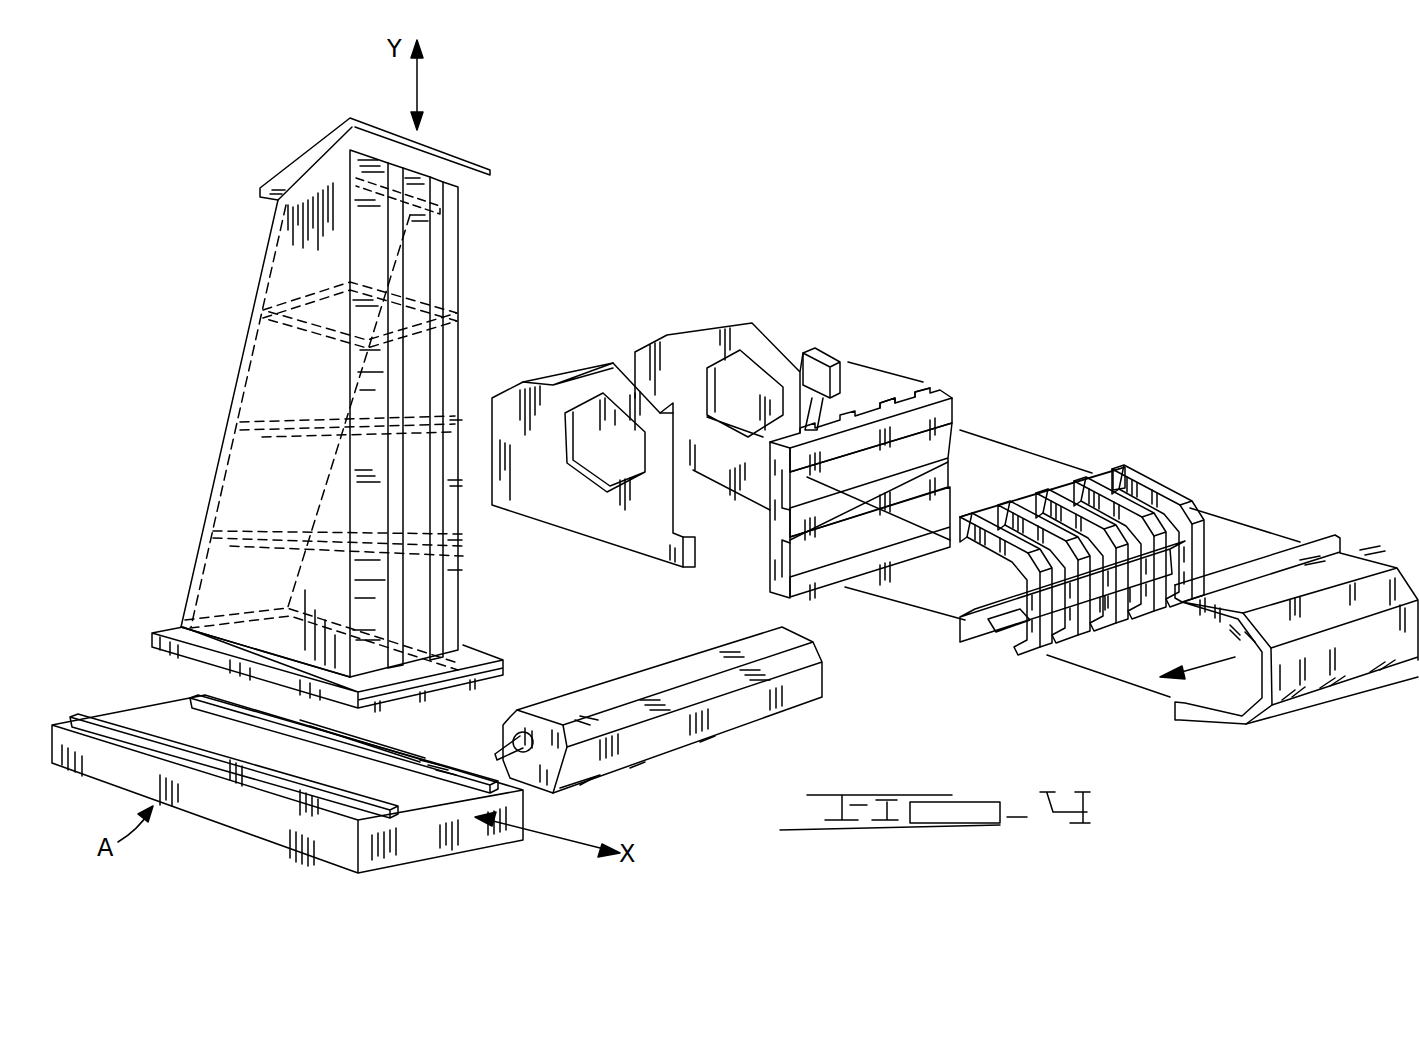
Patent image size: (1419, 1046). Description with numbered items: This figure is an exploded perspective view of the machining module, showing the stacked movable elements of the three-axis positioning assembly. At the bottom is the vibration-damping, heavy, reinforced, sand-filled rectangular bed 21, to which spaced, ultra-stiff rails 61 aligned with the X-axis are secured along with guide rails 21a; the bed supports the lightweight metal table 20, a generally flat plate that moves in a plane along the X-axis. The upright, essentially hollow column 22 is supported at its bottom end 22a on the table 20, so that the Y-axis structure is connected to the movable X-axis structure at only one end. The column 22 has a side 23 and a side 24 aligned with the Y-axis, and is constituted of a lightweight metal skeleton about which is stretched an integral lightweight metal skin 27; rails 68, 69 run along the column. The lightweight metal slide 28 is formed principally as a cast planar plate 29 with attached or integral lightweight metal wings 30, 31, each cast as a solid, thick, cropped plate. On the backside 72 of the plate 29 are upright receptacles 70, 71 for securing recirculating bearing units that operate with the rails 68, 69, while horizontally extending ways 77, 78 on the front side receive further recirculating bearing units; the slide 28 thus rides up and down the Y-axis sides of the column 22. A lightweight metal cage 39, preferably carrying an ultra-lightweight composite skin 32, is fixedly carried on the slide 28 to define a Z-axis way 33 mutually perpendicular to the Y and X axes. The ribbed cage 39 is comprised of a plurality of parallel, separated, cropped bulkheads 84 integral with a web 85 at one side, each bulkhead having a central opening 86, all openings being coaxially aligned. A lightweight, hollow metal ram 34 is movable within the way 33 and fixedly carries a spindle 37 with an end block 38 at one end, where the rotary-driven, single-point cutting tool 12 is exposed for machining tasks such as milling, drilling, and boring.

The single-point cutting tool 12 is at (495, 757).
The table 20 is at (510, 662).
The bed 21 is at (238, 802).
The guide rails 21a is at (212, 743).
The column 22 is at (325, 391).
The bottom end of column 22a is at (257, 652).
The side of column 23 is at (418, 330).
The side of column 24 is at (285, 280).
The metal skin 27 is at (247, 487).
The slide 28 is at (896, 454).
The plate 29 is at (950, 395).
The wing 30 is at (530, 387).
The wing 31 is at (775, 394).
The composite skin 32 is at (1227, 723).
The Z-axis way 33 is at (1208, 657).
The ram 34 is at (669, 715).
The spindle 37 is at (597, 773).
The slide end block 38 is at (535, 710).
The cage 39 is at (998, 635).
The rails 61 is at (433, 767).
The rail 68 is at (402, 165).
The rail 69 is at (443, 187).
The upright receptacle 70 is at (917, 388).
The upright receptacle 71 is at (837, 323).
The backside of plate 72 is at (882, 398).
The horizontally extending way 77 is at (900, 422).
The horizontally extending way 78 is at (935, 507).
The bulkheads 84 is at (1163, 528).
The web 85 is at (1062, 507).
The central opening 86 is at (1190, 508).